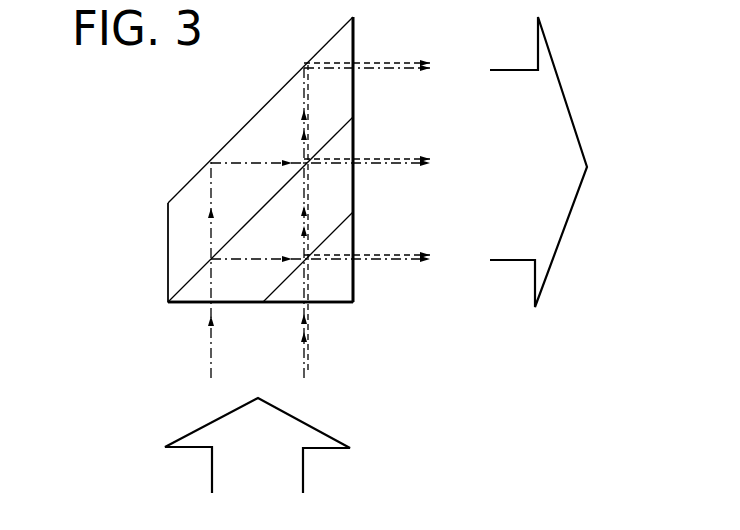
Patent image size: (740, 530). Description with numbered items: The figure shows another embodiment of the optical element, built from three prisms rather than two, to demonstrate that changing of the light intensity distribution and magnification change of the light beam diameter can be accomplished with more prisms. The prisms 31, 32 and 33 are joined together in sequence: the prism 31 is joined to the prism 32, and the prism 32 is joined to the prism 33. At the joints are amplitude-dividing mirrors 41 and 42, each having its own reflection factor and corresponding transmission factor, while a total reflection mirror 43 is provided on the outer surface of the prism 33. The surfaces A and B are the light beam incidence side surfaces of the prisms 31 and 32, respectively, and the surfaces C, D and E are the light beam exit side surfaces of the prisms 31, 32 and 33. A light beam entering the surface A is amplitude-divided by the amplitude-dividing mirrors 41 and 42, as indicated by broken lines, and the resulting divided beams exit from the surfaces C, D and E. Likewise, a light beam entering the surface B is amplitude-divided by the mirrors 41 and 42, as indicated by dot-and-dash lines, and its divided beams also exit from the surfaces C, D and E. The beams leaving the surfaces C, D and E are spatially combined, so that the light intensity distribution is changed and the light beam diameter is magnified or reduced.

The prism 31 is at (340, 280).
The prism 32 is at (192, 304).
The prism 33 is at (182, 228).
The amplitude-dividing mirror 41 is at (284, 296).
The amplitude-dividing mirror 42 is at (183, 287).
The total reflection mirror 43 is at (178, 192).
The light beam incidence side surface A is at (333, 305).
The light beam incidence side surface B is at (237, 305).
The light beam exit side surface C is at (355, 222).
The light beam exit side surface D is at (355, 136).
The light beam exit side surface E is at (355, 33).